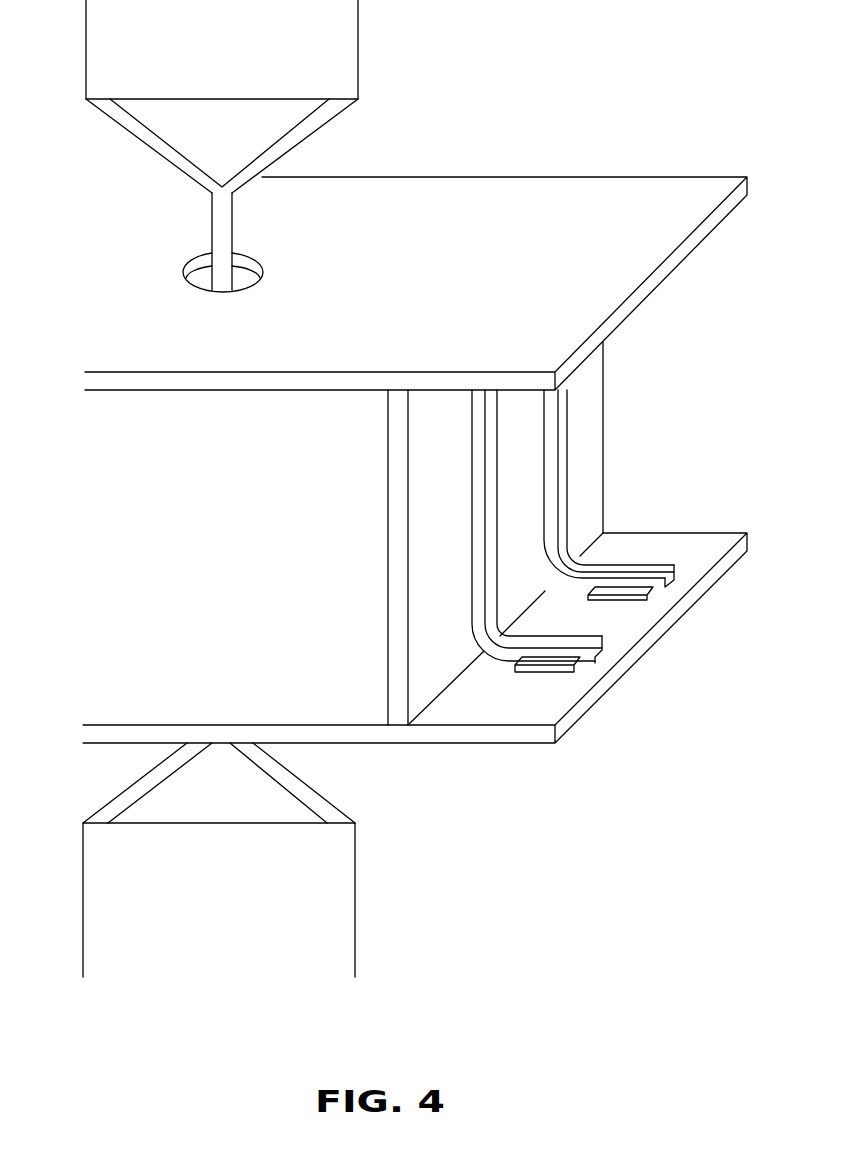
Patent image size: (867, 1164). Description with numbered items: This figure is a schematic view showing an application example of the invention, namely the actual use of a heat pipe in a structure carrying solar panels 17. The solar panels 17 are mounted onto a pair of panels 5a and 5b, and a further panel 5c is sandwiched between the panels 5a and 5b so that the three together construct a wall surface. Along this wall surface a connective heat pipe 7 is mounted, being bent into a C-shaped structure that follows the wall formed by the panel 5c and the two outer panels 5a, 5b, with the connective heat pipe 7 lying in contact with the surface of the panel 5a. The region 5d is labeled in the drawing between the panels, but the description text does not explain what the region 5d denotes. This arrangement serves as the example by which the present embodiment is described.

The solar panels 17 is at (323, 42).
The panel 5a is at (680, 550).
The panel 5b is at (593, 210).
The panel 5c is at (445, 620).
The chamber space 5d is at (220, 548).
The connective heat pipe 7 is at (563, 457).